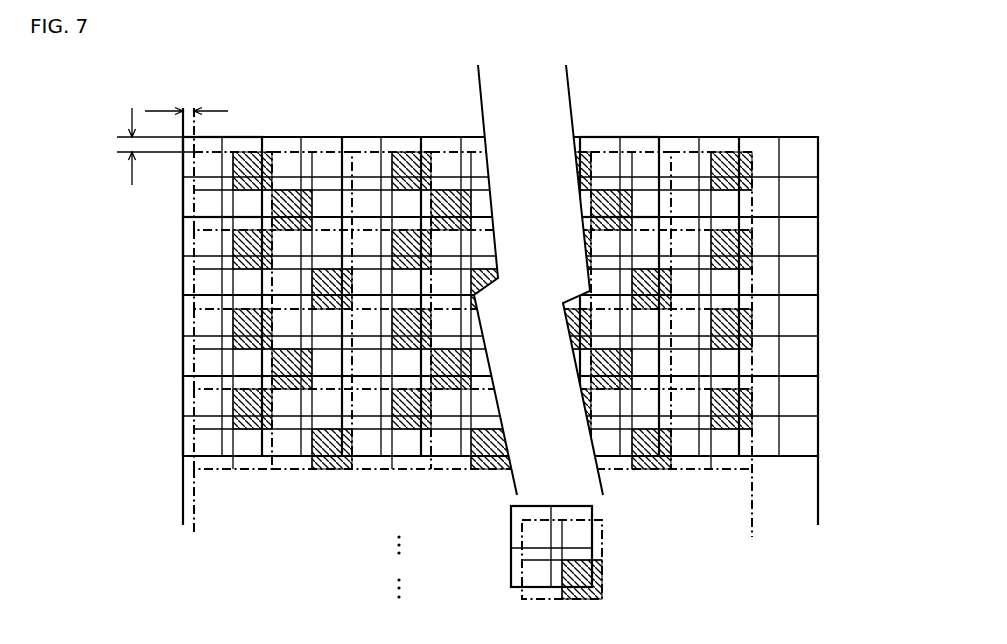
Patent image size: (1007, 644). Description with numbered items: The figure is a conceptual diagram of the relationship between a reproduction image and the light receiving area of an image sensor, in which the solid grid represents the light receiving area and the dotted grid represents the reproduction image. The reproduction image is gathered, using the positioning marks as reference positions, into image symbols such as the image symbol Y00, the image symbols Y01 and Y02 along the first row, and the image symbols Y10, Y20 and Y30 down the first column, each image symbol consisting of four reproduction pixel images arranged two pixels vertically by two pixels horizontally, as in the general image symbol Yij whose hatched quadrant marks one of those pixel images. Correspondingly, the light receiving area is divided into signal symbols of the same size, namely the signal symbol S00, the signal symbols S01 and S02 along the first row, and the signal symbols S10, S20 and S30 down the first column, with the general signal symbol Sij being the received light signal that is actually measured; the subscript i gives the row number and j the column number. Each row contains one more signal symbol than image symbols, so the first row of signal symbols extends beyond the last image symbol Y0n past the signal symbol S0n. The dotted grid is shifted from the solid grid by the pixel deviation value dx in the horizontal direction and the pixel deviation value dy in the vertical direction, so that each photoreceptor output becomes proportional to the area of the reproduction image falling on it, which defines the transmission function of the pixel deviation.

The signal symbol S00 is at (233, 137).
The signal symbol S01 is at (289, 137).
The signal symbol S02 is at (370, 137).
The signal symbol S10 is at (183, 252).
The signal symbol S20 is at (183, 335).
The signal symbol S30 is at (183, 420).
The signal symbol S0n is at (687, 137).
The signal symbol Sij is at (592, 545).
The image symbol Y00 is at (244, 148).
The image symbol Y01 is at (301, 148).
The image symbol Y02 is at (383, 148).
The image symbol Y10 is at (181, 279).
The image symbol Y20 is at (181, 363).
The image symbol Y30 is at (182, 448).
The image symbol Y0n is at (703, 146).
The image symbol Yij is at (602, 588).
The pixel deviation value in the horizontal direction dx is at (186, 102).
The pixel deviation value in the vertical direction dy is at (116, 146).